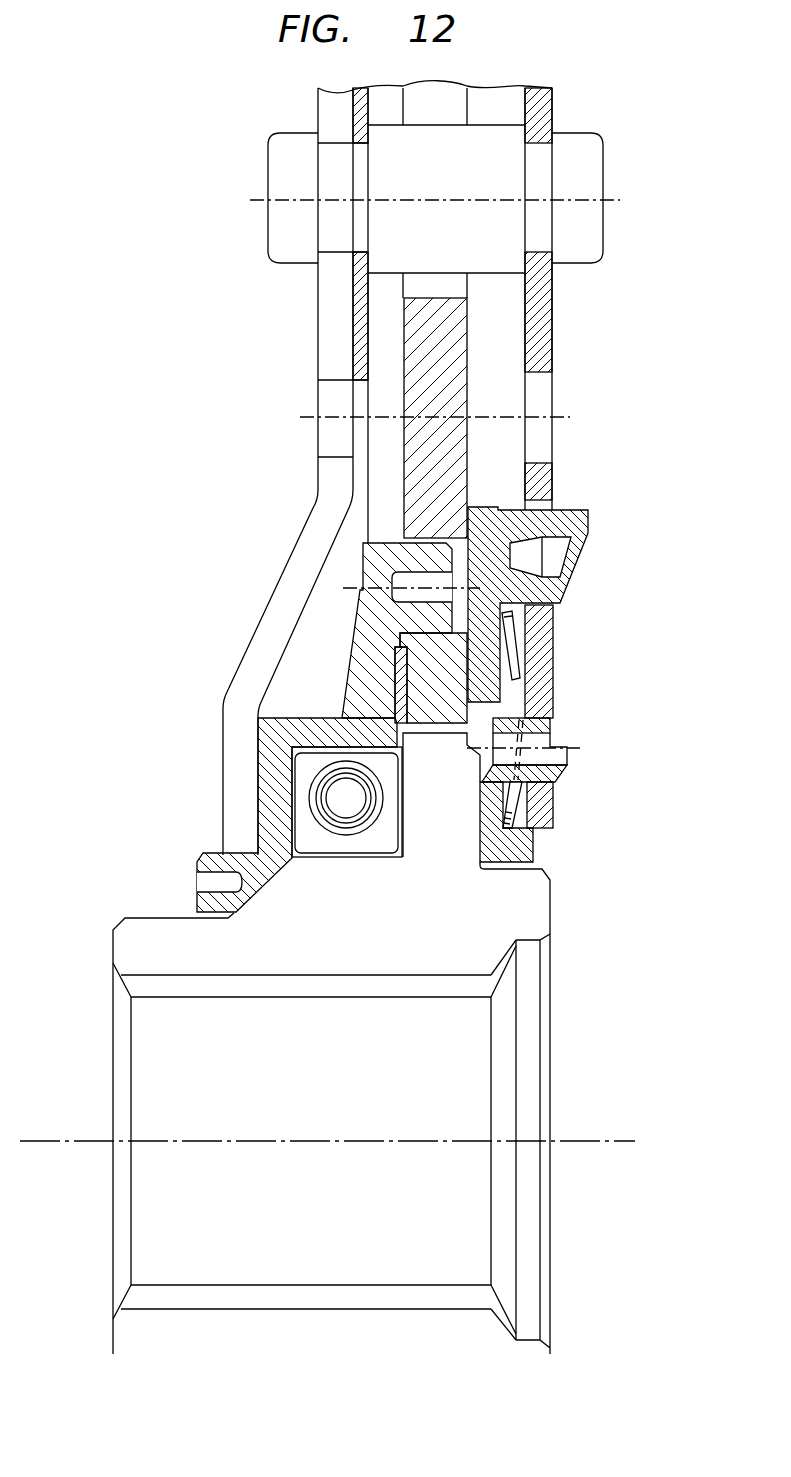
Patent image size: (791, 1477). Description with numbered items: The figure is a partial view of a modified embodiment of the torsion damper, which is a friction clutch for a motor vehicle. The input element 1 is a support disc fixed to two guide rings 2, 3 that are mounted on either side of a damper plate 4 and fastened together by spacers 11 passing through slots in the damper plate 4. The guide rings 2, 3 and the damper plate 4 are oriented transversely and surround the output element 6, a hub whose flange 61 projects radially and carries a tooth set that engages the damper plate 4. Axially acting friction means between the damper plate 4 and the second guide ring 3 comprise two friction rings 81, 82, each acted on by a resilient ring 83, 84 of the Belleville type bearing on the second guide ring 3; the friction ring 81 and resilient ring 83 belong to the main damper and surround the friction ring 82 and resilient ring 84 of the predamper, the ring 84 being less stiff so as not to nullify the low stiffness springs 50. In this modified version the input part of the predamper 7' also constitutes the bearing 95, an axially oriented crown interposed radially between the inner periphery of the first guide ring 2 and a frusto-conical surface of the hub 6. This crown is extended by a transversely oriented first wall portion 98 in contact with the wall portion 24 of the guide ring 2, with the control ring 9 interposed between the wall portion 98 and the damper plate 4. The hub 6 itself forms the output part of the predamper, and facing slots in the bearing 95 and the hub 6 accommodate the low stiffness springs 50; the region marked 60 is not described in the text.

The spacer 11 is at (268, 232).
The input element 1 is at (343, 296).
The first guide ring 2 is at (318, 357).
The second guide ring 3 is at (552, 342).
The damper plate 4 is at (462, 395).
The friction ring 81 is at (588, 513).
The resilient ring 83 is at (553, 650).
The friction ring 82 is at (567, 773).
The resilient ring 84 is at (553, 810).
The flange 61 is at (447, 827).
The first wall portion 98 is at (383, 622).
The control ring 9 is at (392, 665).
The bearing housing 60 is at (355, 717).
The torsion predamper 7' is at (277, 696).
The second resilient members 50 is at (310, 785).
The wall portion 24 is at (237, 812).
The bearing 95 is at (197, 865).
The output element 6 is at (128, 945).